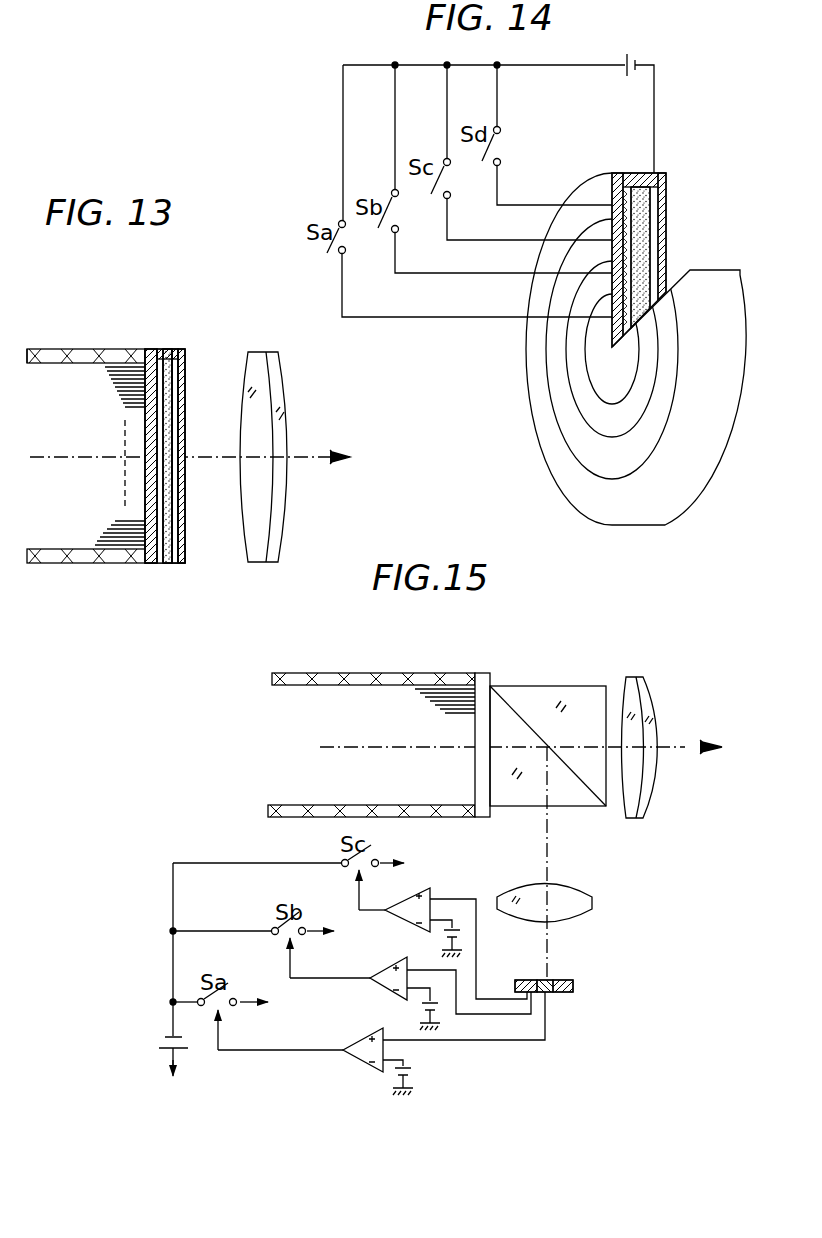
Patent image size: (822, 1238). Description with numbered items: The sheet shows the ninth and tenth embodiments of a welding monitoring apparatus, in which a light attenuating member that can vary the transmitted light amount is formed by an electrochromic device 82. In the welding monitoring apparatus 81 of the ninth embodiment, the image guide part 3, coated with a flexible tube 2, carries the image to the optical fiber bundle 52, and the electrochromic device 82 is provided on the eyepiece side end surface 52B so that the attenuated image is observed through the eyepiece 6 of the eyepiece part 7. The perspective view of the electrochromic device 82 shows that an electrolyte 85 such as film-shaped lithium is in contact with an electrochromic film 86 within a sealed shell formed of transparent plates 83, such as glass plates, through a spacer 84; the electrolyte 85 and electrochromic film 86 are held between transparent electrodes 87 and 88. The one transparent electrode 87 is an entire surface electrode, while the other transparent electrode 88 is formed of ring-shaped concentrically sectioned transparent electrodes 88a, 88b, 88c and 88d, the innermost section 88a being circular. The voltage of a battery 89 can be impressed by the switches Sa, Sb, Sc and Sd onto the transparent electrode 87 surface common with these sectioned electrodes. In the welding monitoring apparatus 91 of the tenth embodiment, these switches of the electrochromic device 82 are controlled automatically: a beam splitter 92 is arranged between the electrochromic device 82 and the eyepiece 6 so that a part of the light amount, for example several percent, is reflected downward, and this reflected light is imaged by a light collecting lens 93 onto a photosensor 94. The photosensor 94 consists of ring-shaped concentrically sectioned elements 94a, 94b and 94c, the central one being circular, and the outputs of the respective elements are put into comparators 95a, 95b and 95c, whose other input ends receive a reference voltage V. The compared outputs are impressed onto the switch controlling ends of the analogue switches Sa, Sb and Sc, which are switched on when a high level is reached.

In FIG. 13, the flexible tube 2 is at (52, 566).
In FIG. 15, the flexible tube 2 is at (397, 680).
In FIG. 15, the image guide part 3 is at (366, 670).
In FIG. 13, the eyepiece 6 is at (282, 386).
In FIG. 15, the eyepiece 6 is at (638, 677).
In FIG. 13, the eyepiece part 7 is at (277, 350).
In FIG. 13, the optical fiber bundle 52 is at (55, 365).
In FIG. 15, the optical fiber bundle 52 is at (328, 700).
In FIG. 13, the eyepiece side end surface 52B is at (140, 548).
In FIG. 15, the eyepiece side end surface 52B is at (473, 800).
In FIG. 13, the welding monitoring apparatus 81 is at (197, 300).
In FIG. 13, the electrochromic device 82 is at (166, 347).
In FIG. 14, the electrochromic device 82 is at (527, 413).
In FIG. 15, the electrochromic device 82 is at (486, 670).
In FIG. 13, the transparent plates 83 is at (145, 352).
In FIG. 14, the transparent plates 83 is at (618, 176).
In FIG. 13, the spacer 84 is at (175, 351).
In FIG. 14, the spacer 84 is at (640, 182).
In FIG. 13, the electrolyte 85 is at (170, 562).
In FIG. 14, the electrolyte 85 is at (652, 268).
In FIG. 13, the electrochromic film 86 is at (162, 562).
In FIG. 14, the electrochromic film 86 is at (652, 210).
In FIG. 13, the transparent electrode 87 is at (182, 368).
In FIG. 14, the transparent electrode 87 is at (661, 183).
In FIG. 15, the transparent electrode 87 is at (193, 1094).
In FIG. 13, the transparent electrode 88 is at (150, 349).
In FIG. 14, the transparent electrode 88 is at (628, 172).
In FIG. 13, the sectioned transparent electrode 88a is at (152, 468).
In FIG. 14, the sectioned transparent electrode 88a is at (625, 305).
In FIG. 13, the sectioned transparent electrode 88b is at (152, 420).
In FIG. 14, the sectioned transparent electrode 88b is at (625, 272).
In FIG. 15, the sectioned transparent electrode 88b is at (313, 967).
In FIG. 13, the sectioned transparent electrode 88c is at (152, 398).
In FIG. 14, the sectioned transparent electrode 88c is at (625, 240).
In FIG. 15, the sectioned transparent electrode 88c is at (417, 862).
In FIG. 13, the sectioned transparent electrode 88d is at (150, 378).
In FIG. 14, the sectioned transparent electrode 88d is at (625, 192).
In FIG. 14, the battery 89 is at (632, 58).
In FIG. 15, the battery 89 is at (160, 1038).
In FIG. 15, the welding monitoring apparatus 91 is at (531, 632).
In FIG. 15, the beam splitter 92 is at (545, 684).
In FIG. 15, the light collecting lens 93 is at (585, 888).
In FIG. 15, the photosensor 94 is at (562, 998).
In FIG. 15, the sectioned element 94a is at (546, 980).
In FIG. 15, the sectioned element 94b is at (560, 978).
In FIG. 15, the sectioned element 94c is at (562, 995).
In FIG. 15, the comparator 95a is at (350, 1062).
In FIG. 15, the comparator 95b is at (375, 990).
In FIG. 15, the comparator 95c is at (396, 924).